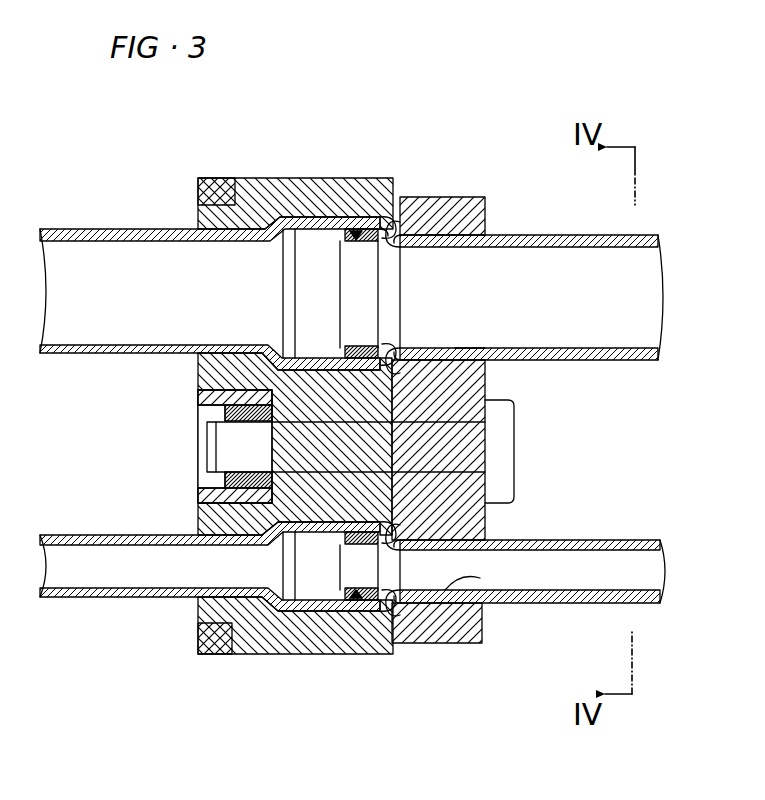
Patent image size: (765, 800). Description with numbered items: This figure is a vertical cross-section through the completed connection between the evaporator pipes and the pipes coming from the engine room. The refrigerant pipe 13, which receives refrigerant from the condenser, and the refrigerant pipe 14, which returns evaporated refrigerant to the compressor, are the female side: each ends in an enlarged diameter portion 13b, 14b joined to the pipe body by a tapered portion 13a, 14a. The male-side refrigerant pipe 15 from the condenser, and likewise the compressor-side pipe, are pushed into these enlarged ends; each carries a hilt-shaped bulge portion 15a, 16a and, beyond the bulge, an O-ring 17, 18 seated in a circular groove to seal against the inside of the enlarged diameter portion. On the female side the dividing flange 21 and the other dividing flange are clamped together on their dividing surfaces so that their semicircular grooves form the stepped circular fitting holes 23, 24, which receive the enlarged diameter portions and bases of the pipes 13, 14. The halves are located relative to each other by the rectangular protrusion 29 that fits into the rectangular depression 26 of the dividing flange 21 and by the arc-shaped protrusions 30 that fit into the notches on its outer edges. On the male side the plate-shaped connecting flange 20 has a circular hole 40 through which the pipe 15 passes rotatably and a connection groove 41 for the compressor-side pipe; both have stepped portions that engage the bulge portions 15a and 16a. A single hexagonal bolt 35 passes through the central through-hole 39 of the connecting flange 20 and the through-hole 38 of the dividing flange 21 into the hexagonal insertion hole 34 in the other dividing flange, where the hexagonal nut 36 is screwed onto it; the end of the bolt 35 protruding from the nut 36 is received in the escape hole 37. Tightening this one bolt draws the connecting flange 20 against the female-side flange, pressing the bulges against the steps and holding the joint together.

The refrigerant pipe 13 is at (68, 599).
The tapered portion 13a is at (258, 656).
The enlarged diameter portion 13b is at (334, 656).
The refrigerant pipe 14 is at (68, 356).
The tapered portion 14a is at (258, 205).
The enlarged diameter portion 14b is at (323, 205).
The refrigerant pipe 15 is at (622, 361).
The bulge portion 15a is at (416, 643).
The bulge portion 16a is at (415, 197).
The O-ring 17 is at (370, 656).
The O-ring 18 is at (352, 185).
The connecting flange 20 is at (466, 645).
The dividing flange 21 is at (298, 656).
The fitting hole 23 is at (235, 562).
The fitting hole 24 is at (232, 240).
The depression 26 is at (198, 492).
The protrusion 29 is at (198, 477).
The arc-shaped protrusion 30 is at (218, 177).
The insertion hole 34 is at (205, 450).
The hexagonal bolt 35 is at (520, 447).
The hexagonal nut 36 is at (198, 378).
The escape hole 37 is at (198, 426).
The through-hole 38 is at (374, 422).
The through-hole 39 is at (452, 423).
The circular hole 40 is at (480, 578).
The connection groove 41 is at (460, 347).